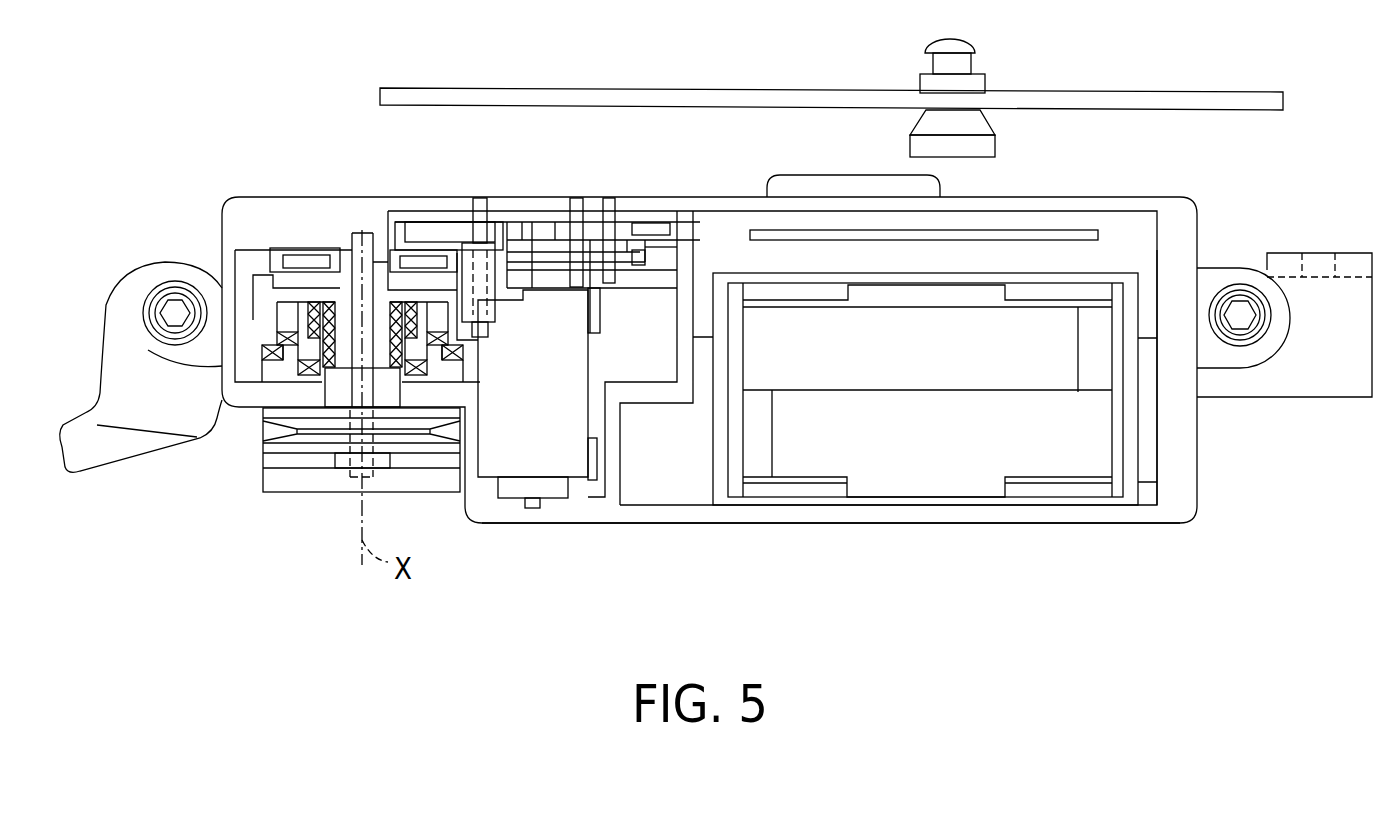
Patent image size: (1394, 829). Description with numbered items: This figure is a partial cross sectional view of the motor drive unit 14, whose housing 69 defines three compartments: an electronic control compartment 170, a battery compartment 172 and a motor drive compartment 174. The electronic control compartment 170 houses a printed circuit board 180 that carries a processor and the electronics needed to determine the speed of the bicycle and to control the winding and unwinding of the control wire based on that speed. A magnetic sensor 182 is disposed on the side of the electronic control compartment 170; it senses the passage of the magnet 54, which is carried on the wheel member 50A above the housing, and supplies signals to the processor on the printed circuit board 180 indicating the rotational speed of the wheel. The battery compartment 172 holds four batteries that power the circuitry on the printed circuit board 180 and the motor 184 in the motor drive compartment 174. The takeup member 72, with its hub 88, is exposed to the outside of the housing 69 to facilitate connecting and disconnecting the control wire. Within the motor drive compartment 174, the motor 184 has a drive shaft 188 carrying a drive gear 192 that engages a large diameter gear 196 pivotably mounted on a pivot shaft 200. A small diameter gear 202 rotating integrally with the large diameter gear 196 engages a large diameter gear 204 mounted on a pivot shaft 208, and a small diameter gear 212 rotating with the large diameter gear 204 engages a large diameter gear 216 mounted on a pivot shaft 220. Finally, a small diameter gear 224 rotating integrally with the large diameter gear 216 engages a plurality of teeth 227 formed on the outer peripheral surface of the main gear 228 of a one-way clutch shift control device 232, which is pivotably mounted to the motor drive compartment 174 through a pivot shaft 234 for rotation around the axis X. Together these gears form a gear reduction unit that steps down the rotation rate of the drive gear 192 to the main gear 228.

The motor drive unit 14 is at (1262, 450).
The lever / mounting arm 50A is at (823, 93).
The magnet 54 is at (978, 131).
The housing 69 is at (1185, 525).
The takeup member 72 is at (273, 447).
The pulley hub 88 is at (323, 435).
The electronic control compartment 170 is at (1143, 245).
The battery compartment 172 is at (750, 460).
The motor drive compartment 174 is at (245, 257).
The printed circuit board 180 is at (1040, 233).
The magnetic sensor 182 is at (825, 188).
The motor 184 is at (500, 460).
The drive shaft 188 is at (530, 212).
The drive gear 192 is at (520, 230).
The large diameter gear 196 is at (645, 228).
The pivot shaft 200 is at (643, 227).
The small diameter gear 202 is at (645, 247).
The large diameter gear 204 is at (633, 262).
The pivot shaft 208 is at (580, 197).
The small diameter gear 212 is at (603, 197).
The large diameter gear 216 is at (412, 230).
The pivot shaft 220 is at (470, 257).
The small diameter gear 224 is at (415, 232).
The teeth 227 is at (258, 288).
The main gear 228 is at (255, 320).
The one-way clutch shift control device 232 is at (300, 222).
The pivot shaft 234 is at (357, 232).